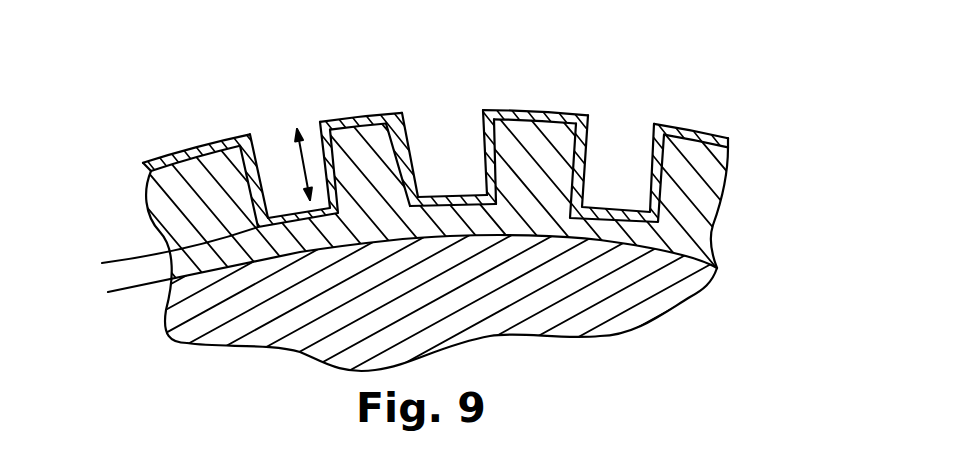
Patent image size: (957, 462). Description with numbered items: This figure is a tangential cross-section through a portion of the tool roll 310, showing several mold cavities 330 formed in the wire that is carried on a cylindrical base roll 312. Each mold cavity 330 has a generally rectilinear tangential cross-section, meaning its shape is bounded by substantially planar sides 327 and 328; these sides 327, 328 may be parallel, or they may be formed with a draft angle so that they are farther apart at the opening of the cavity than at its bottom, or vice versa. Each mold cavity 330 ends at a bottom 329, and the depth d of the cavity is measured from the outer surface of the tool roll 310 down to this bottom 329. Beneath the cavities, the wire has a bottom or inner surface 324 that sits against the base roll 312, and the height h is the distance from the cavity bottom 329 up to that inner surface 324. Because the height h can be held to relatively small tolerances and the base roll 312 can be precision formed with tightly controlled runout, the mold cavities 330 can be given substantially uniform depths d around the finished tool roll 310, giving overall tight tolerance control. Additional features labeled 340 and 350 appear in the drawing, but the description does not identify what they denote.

The tool roll 310 is at (757, 127).
The base roll 312 is at (650, 308).
The inner surface 324 is at (712, 280).
The side 327 is at (418, 117).
The side 328 is at (474, 116).
The bottom 329 is at (447, 192).
The mold cavity 330 is at (270, 130).
The groove 340 is at (307, 135).
The edge portion of coating 350 is at (206, 145).
The height h is at (121, 330).
The depth d is at (303, 166).